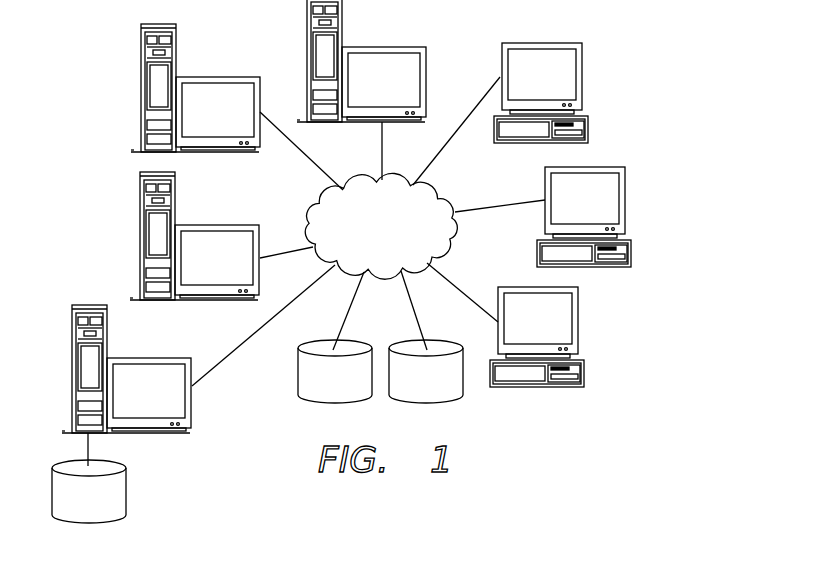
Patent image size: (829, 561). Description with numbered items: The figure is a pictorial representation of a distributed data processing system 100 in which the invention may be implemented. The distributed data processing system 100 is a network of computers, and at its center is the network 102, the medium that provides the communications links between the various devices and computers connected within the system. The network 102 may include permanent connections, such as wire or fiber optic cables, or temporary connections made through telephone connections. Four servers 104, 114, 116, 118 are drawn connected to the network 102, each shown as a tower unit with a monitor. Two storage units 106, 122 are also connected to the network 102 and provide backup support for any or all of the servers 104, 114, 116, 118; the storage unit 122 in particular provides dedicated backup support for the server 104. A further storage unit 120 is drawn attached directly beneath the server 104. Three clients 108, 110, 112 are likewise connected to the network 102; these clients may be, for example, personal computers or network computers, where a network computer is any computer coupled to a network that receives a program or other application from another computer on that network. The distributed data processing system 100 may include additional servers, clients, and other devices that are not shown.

The distributed data processing system 100 is at (633, 410).
The network 102 is at (400, 237).
The server 104 is at (72, 370).
The storage unit 106 is at (445, 391).
The client 108 is at (582, 75).
The client 110 is at (627, 202).
The client 112 is at (580, 322).
The server 114 is at (140, 238).
The server 116 is at (141, 82).
The server 118 is at (307, 30).
The storage unit 120 is at (108, 510).
The storage unit 122 is at (354, 391).